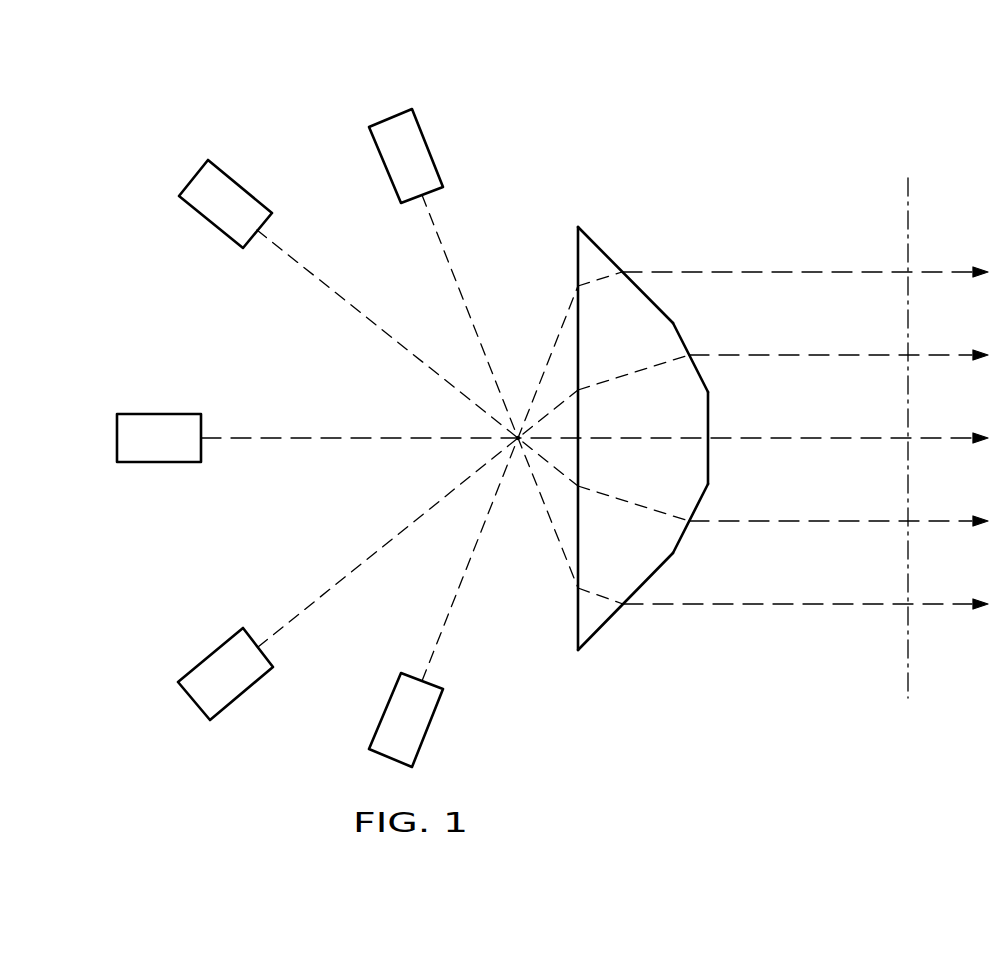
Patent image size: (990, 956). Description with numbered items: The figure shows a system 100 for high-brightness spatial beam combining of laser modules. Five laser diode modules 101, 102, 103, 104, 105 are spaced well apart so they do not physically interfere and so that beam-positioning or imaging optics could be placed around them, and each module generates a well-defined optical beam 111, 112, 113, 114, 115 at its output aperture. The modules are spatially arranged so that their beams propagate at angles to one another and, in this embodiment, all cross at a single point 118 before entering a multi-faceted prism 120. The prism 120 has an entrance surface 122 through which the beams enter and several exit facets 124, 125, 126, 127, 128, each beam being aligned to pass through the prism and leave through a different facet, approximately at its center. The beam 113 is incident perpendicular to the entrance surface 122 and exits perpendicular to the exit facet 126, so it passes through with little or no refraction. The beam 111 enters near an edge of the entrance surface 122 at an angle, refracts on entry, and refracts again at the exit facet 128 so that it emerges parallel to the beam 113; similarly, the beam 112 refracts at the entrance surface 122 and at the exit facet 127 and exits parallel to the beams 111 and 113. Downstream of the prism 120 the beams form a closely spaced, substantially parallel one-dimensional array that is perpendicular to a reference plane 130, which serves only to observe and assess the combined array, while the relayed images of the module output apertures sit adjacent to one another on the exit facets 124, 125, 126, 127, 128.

The system for high-brightness spatial beam combining 100 is at (232, 92).
The laser diode module 101 is at (428, 147).
The laser diode module 102 is at (243, 182).
The laser diode module 103 is at (158, 414).
The laser diode module 104 is at (212, 655).
The laser diode module 105 is at (384, 708).
The optical beam 111 is at (437, 232).
The optical beam 112 is at (307, 268).
The optical beam 113 is at (348, 437).
The optical beam 114 is at (310, 607).
The optical beam 115 is at (438, 640).
The crossing point 118 is at (514, 442).
The multi-faceted prism 120 is at (644, 442).
The entrance surface 122 is at (578, 262).
The exit facet 124 is at (603, 250).
The exit facet 125 is at (680, 335).
The exit facet 126 is at (710, 422).
The exit facet 127 is at (680, 547).
The exit facet 128 is at (603, 627).
The reference plane 130 is at (910, 190).